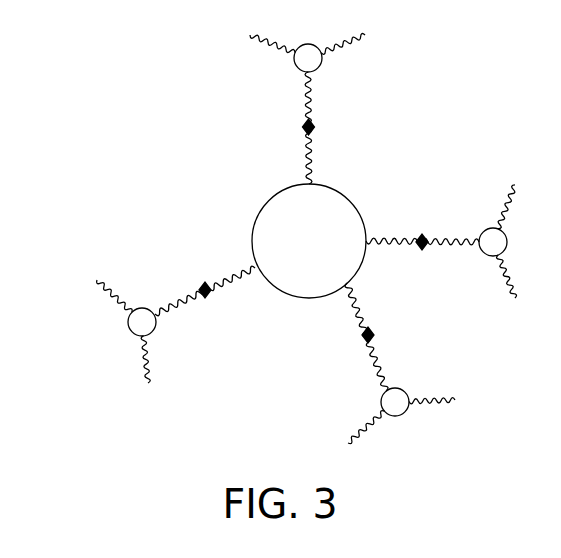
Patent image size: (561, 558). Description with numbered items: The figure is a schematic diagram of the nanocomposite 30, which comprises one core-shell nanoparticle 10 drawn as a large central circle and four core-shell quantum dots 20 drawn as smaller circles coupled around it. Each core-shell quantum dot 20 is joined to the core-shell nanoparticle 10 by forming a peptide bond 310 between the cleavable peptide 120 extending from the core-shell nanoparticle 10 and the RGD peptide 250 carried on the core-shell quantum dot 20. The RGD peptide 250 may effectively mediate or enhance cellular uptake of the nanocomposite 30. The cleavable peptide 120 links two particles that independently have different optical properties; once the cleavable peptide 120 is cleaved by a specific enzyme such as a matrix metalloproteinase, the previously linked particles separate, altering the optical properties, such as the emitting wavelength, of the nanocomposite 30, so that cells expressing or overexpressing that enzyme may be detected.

The nanocomposite 30 is at (77, 45).
The core-shell nanoparticle 10 is at (308, 300).
The core-shell quantum dot 20 is at (322, 67).
The RGD peptide 250 is at (312, 100).
The peptide bond 310 is at (302, 127).
The cleavable peptide 120 is at (243, 270).